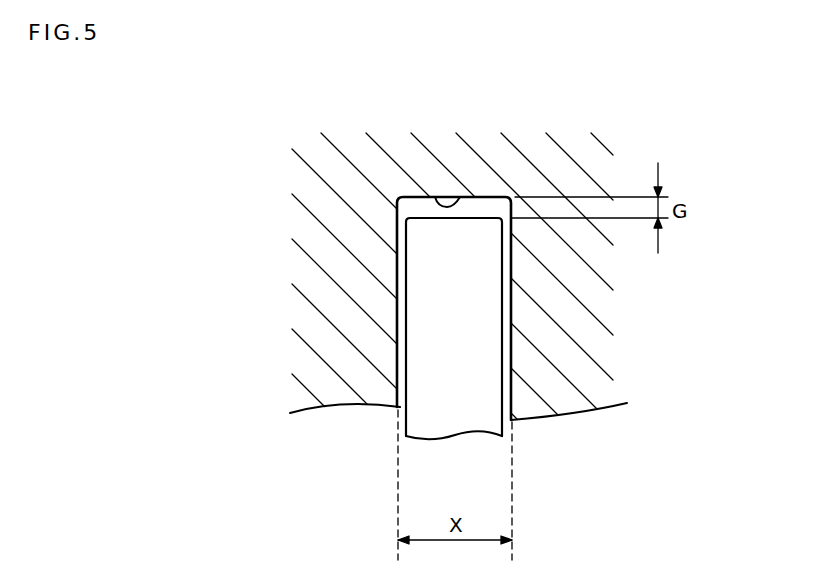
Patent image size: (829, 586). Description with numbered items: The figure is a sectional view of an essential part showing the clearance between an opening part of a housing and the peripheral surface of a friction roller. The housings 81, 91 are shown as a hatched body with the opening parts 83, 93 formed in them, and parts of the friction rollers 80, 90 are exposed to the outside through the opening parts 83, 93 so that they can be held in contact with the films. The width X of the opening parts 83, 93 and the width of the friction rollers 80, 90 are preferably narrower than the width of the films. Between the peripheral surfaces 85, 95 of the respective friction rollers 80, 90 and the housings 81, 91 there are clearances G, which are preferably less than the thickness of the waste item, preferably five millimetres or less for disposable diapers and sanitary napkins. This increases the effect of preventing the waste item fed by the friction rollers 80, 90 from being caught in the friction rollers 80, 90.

The friction roller 80 is at (454, 355).
The friction roller 90 is at (453, 427).
The housing 81 is at (458, 312).
The housing 91 is at (578, 404).
The opening part 83 is at (421, 151).
The opening part 93 is at (435, 203).
The peripheral surface 85 is at (402, 259).
The peripheral surface 95 is at (428, 218).